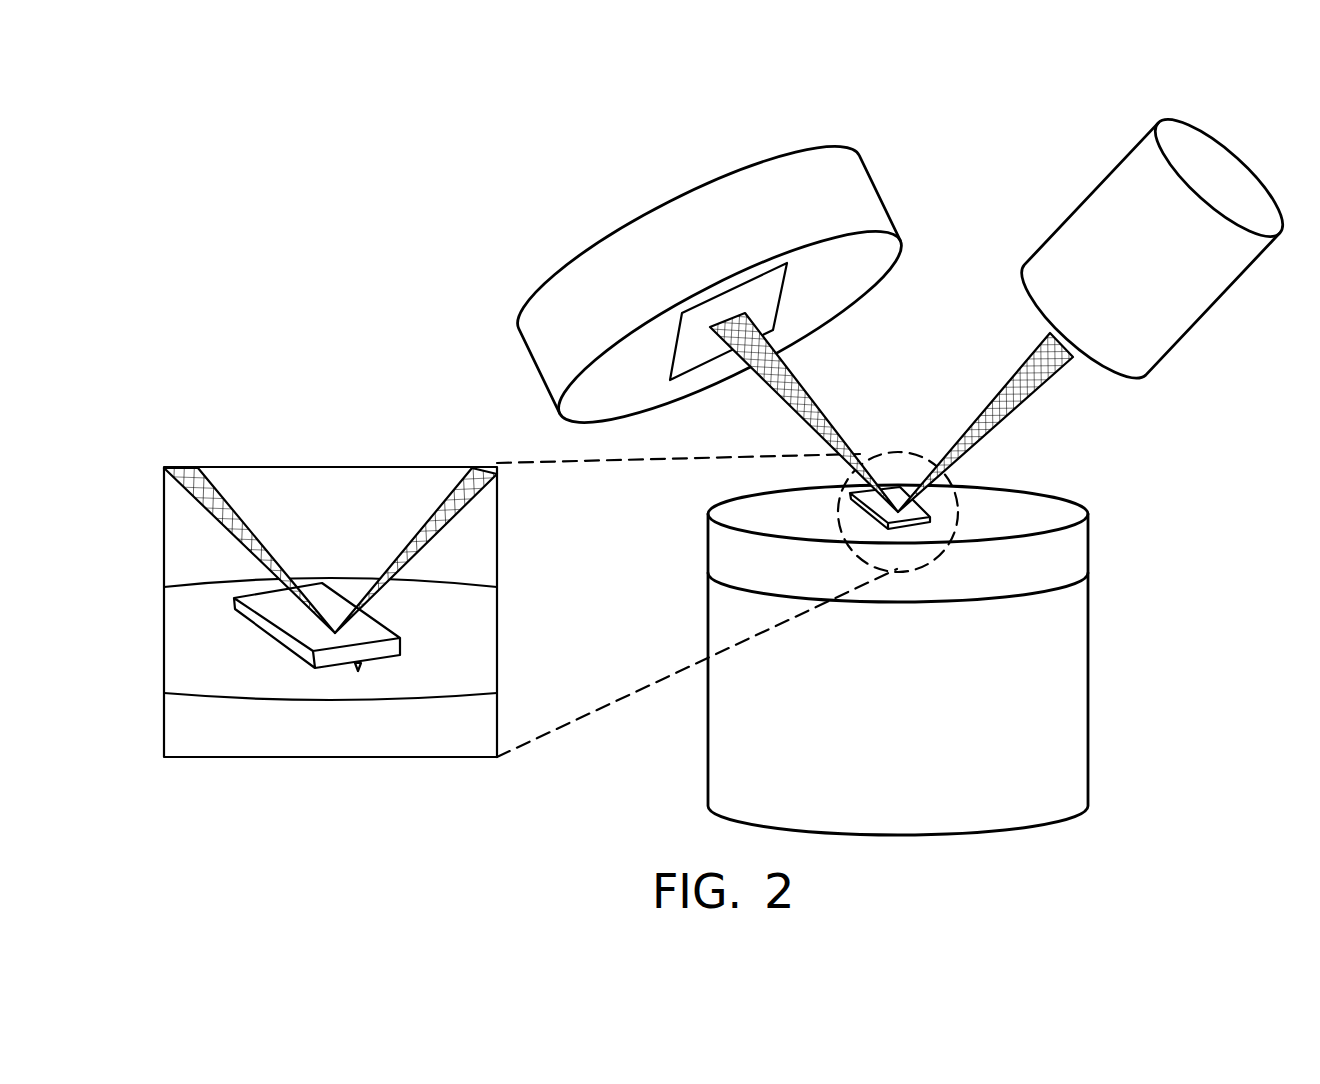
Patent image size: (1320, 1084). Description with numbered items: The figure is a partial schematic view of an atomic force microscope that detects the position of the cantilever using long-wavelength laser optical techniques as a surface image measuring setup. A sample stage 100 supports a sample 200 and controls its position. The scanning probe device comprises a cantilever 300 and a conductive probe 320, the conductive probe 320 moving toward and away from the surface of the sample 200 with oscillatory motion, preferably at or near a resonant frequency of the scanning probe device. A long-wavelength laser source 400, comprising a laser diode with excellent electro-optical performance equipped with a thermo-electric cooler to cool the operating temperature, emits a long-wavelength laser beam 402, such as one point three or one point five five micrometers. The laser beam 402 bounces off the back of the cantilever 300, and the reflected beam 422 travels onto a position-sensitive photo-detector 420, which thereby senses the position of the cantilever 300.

The sample stage 100 is at (1090, 572).
The sample 200 is at (898, 482).
The cantilever 300 is at (273, 630).
The conductive probe 320 is at (360, 666).
The long-wavelength laser source 400 is at (1187, 318).
The laser beam 402 is at (1000, 398).
The position-sensitive photo-detector 420 is at (747, 172).
The reflected beam 422 is at (807, 385).